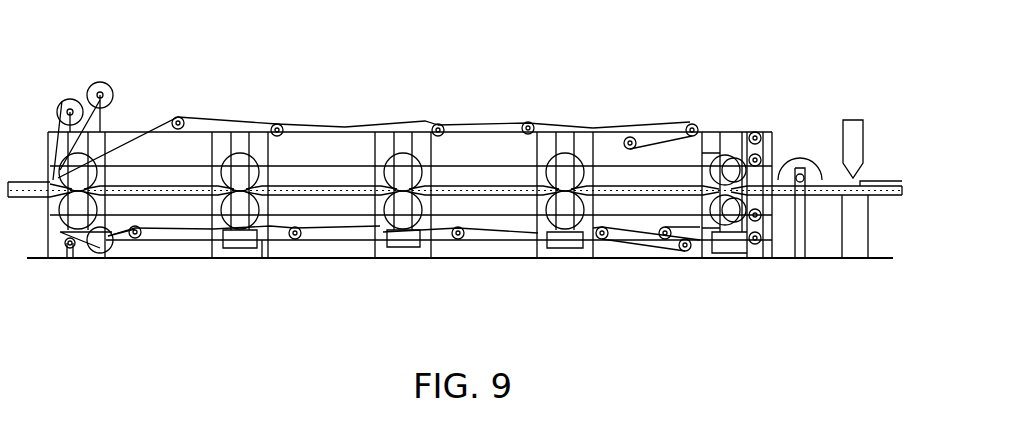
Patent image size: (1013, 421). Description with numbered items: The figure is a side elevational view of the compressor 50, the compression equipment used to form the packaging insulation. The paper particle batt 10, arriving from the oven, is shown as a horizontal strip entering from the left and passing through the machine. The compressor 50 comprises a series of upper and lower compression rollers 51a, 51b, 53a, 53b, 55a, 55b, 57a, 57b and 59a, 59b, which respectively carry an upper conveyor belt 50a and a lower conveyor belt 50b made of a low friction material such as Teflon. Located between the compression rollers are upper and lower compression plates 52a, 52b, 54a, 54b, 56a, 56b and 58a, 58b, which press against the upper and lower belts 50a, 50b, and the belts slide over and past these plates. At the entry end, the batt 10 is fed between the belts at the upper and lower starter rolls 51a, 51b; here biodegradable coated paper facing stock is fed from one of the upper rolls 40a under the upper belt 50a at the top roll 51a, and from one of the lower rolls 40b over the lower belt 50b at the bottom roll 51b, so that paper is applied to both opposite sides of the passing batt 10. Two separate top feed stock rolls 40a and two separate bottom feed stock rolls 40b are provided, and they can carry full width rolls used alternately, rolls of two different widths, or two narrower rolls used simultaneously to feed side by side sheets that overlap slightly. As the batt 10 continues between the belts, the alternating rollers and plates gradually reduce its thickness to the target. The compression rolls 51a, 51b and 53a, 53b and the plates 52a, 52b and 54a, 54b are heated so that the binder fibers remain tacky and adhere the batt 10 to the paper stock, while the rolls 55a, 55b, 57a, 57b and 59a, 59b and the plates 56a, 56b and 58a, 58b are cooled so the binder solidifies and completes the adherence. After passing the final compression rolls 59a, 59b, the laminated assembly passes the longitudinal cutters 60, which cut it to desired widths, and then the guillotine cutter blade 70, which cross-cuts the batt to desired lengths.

The batt 10 is at (345, 183).
The upper rolls 40a is at (88, 92).
The lower rolls 40b is at (80, 248).
The compressor 50 is at (594, 48).
The upper conveyor belt 50a is at (182, 180).
The lower conveyor belt 50b is at (192, 195).
The upper starter roll 51a is at (53, 178).
The lower starter roll 51b is at (45, 223).
The upper compression plate 52a is at (148, 150).
The lower compression plate 52b is at (163, 228).
The upper compression roller 53a is at (263, 153).
The lower compression roller 53b is at (263, 227).
The upper compression plate 54a is at (325, 150).
The lower compression plate 54b is at (347, 225).
The upper compression roller 55a is at (423, 163).
The lower compression roller 55b is at (425, 222).
The upper compression plate 56a is at (498, 150).
The lower compression plate 56b is at (502, 227).
The upper compression roller 57a is at (588, 163).
The lower compression roller 57b is at (595, 227).
The upper compression plate 58a is at (613, 127).
The lower compression plate 58b is at (640, 227).
The upper final compression roll 59a is at (710, 160).
The lower final compression roll 59b is at (720, 227).
The longitudinal cutters 60 is at (800, 163).
The guillotine cutter blade 70 is at (862, 143).